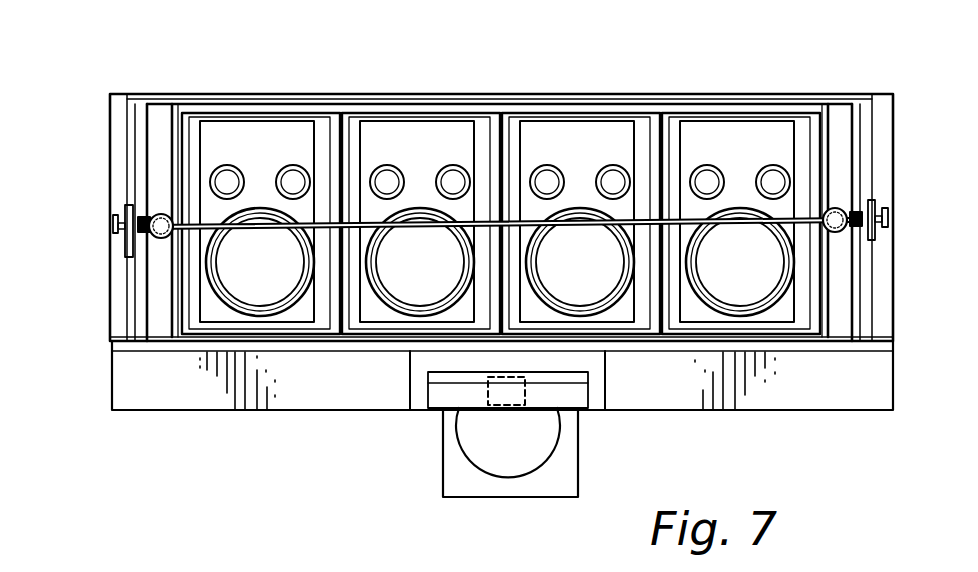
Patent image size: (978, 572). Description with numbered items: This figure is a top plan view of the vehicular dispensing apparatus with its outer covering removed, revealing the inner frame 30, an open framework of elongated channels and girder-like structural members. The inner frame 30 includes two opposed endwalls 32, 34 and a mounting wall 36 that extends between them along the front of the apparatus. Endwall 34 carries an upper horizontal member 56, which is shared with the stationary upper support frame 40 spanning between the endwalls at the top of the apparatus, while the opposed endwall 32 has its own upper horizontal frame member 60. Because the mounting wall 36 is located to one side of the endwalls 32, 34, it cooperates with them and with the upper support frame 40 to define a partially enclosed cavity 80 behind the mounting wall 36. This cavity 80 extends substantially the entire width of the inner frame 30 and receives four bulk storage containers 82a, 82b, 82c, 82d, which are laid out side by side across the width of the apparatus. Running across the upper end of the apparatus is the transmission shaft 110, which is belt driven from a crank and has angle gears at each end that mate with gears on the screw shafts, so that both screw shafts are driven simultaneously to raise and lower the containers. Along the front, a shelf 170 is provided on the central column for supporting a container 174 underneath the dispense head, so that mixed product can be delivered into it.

The inner frame 30 is at (496, 243).
The endwall 32 is at (128, 194).
The endwall 34 is at (877, 194).
The mounting wall 36 is at (99, 357).
The upper support frame 40 is at (421, 86).
The upper horizontal member 56 is at (888, 168).
The upper horizontal frame member 60 is at (110, 153).
The cavity 80 is at (180, 116).
The bulk storage container 82a is at (758, 153).
The bulk storage container 82b is at (598, 153).
The bulk storage container 82c is at (438, 153).
The bulk storage container 82d is at (261, 223).
The transmission shaft 110 is at (269, 229).
The shelf 170 is at (469, 462).
The container 174 is at (472, 445).